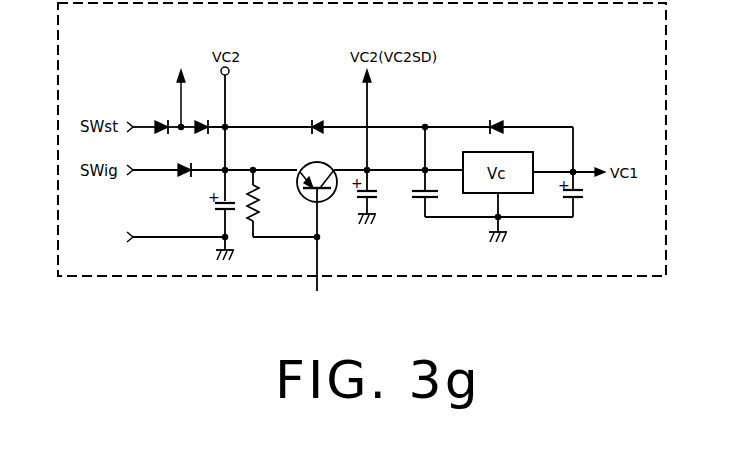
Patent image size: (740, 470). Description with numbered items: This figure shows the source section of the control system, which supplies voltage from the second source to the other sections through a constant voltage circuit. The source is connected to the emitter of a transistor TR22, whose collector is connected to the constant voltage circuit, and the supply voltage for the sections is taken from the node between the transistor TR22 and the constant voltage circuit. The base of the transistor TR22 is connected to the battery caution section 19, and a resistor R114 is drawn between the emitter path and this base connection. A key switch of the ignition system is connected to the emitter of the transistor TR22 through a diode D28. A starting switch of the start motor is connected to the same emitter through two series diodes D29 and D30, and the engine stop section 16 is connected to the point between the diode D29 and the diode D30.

The engine stop section 16 is at (180, 89).
The battery caution section 19 is at (316, 276).
The diode D28 is at (184, 180).
The diode D29 is at (162, 137).
The diode D30 is at (203, 137).
The resistor R114 is at (273, 203).
The transistor TR22 is at (316, 192).